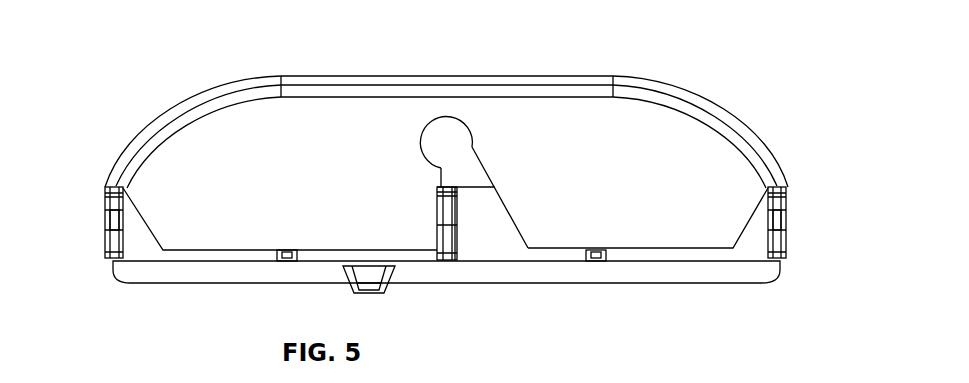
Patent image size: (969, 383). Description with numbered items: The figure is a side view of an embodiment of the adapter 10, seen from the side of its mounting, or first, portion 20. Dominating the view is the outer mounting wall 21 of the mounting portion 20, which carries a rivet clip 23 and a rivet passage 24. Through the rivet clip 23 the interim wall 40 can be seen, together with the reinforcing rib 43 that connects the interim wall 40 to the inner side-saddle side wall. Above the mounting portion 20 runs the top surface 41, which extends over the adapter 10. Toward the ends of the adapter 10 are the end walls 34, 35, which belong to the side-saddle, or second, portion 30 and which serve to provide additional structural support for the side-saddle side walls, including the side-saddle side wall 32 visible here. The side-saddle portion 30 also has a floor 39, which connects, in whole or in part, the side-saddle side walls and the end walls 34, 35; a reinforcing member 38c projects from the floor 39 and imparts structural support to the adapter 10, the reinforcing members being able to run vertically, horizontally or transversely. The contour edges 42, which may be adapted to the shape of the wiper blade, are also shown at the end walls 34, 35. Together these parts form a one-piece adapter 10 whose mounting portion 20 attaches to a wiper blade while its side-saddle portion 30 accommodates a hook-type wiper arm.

The adapter 10 is at (155, 68).
The mounting portion 20 is at (615, 127).
The top surface 41 is at (327, 78).
The interim wall 40 is at (456, 191).
The rivet clip 23 is at (447, 142).
The rivet passage 24 is at (485, 222).
The outer mounting wall 21 is at (213, 212).
The side-saddle side wall 32 is at (655, 255).
The end wall 34 is at (108, 247).
The end wall 35 is at (788, 215).
The contour edges 42 is at (116, 222).
The reinforcing rib 43 is at (458, 262).
The side-saddle portion 30 is at (446, 306).
The floor 39 is at (280, 283).
The reinforcing member 38c is at (372, 292).